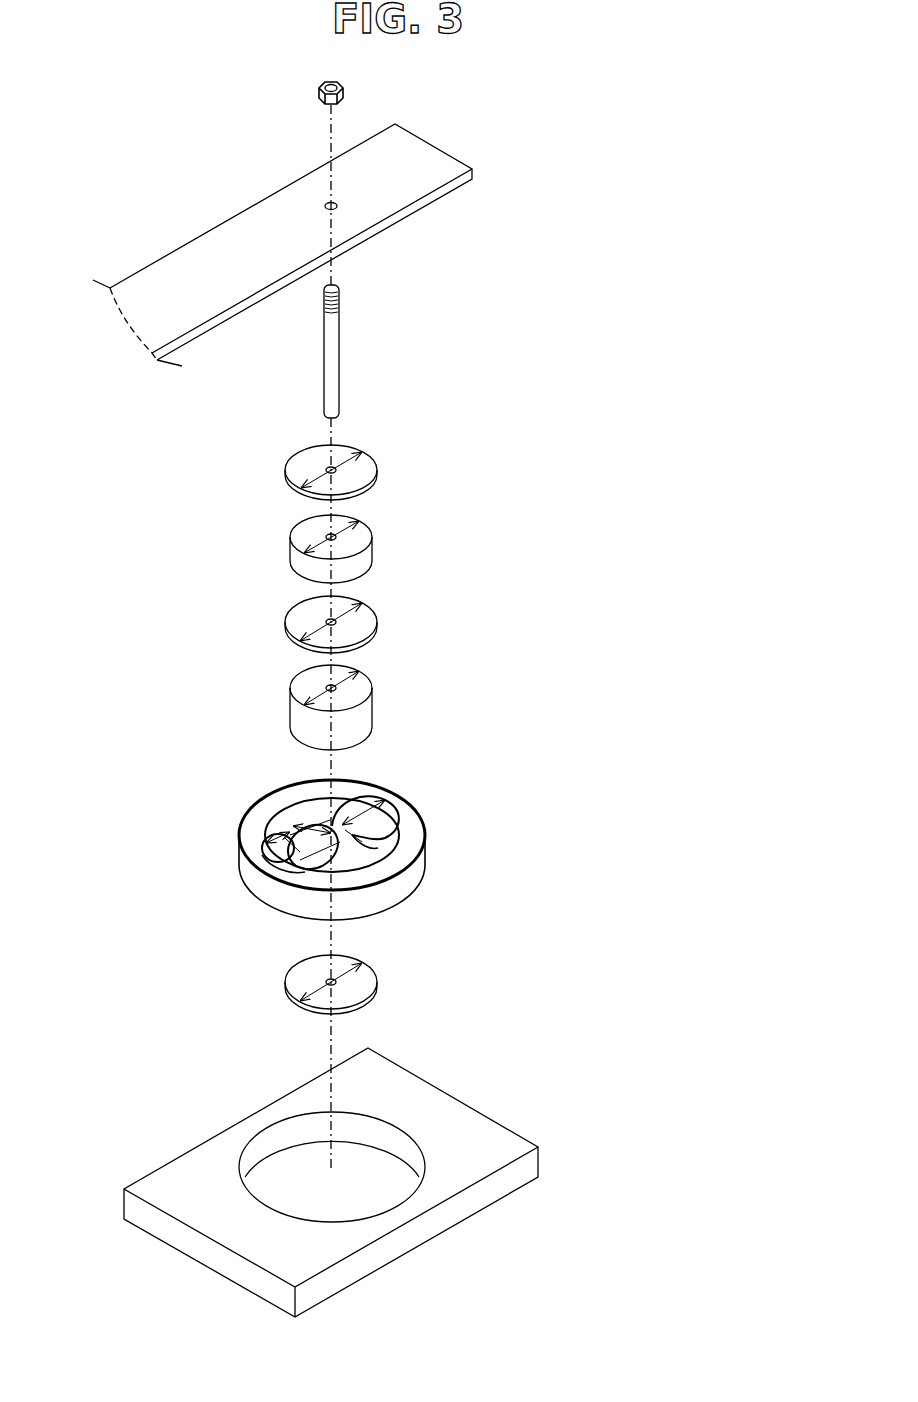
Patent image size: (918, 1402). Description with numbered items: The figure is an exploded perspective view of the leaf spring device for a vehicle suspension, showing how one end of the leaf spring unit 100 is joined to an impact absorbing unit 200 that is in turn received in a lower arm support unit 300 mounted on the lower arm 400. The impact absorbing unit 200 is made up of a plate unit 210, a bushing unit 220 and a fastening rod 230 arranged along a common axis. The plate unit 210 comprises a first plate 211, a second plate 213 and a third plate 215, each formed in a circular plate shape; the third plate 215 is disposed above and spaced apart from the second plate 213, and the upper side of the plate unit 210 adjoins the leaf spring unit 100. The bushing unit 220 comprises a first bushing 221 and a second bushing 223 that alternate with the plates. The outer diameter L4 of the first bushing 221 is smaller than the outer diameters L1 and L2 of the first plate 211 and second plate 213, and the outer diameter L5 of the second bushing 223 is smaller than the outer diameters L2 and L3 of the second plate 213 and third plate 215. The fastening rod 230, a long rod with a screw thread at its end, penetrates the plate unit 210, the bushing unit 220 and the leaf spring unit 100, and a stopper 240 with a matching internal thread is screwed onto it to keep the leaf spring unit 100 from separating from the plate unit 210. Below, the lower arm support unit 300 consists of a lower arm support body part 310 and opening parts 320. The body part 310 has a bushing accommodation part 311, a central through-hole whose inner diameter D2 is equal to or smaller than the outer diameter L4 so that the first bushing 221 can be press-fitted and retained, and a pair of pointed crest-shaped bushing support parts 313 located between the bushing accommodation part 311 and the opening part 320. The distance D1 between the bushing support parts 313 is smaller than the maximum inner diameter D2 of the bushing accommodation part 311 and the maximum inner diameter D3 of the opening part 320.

The leaf spring unit 100 is at (165, 280).
The impact absorbing unit 200 is at (597, 496).
The plate unit 210 is at (487, 526).
The first plate 211 is at (387, 978).
The second plate 213 is at (357, 610).
The third plate 215 is at (365, 448).
The bushing unit 220 is at (146, 577).
The first bushing 221 is at (273, 698).
The second bushing 223 is at (273, 528).
The fastening rod 230 is at (339, 341).
The stopper 240 is at (343, 85).
The lower arm support unit 300 is at (522, 790).
The lower arm support body part 310 is at (400, 847).
The bushing accommodation part 311 is at (365, 848).
The bushing support part 313 is at (297, 880).
The opening part 320 is at (373, 812).
The lower arm 400 is at (450, 1123).
The outer diameter of first plate L1 is at (362, 970).
The outer diameter of second plate L2 is at (317, 627).
The outer diameter of third plate L3 is at (301, 489).
The outer diameter of first bushing L4 is at (305, 704).
The outer diameter of second bushing L5 is at (303, 552).
The distance between bushing support parts D1 is at (292, 826).
The inner diameter of bushing accommodation part D2 is at (342, 825).
The inner diameter of opening part D3 is at (282, 832).